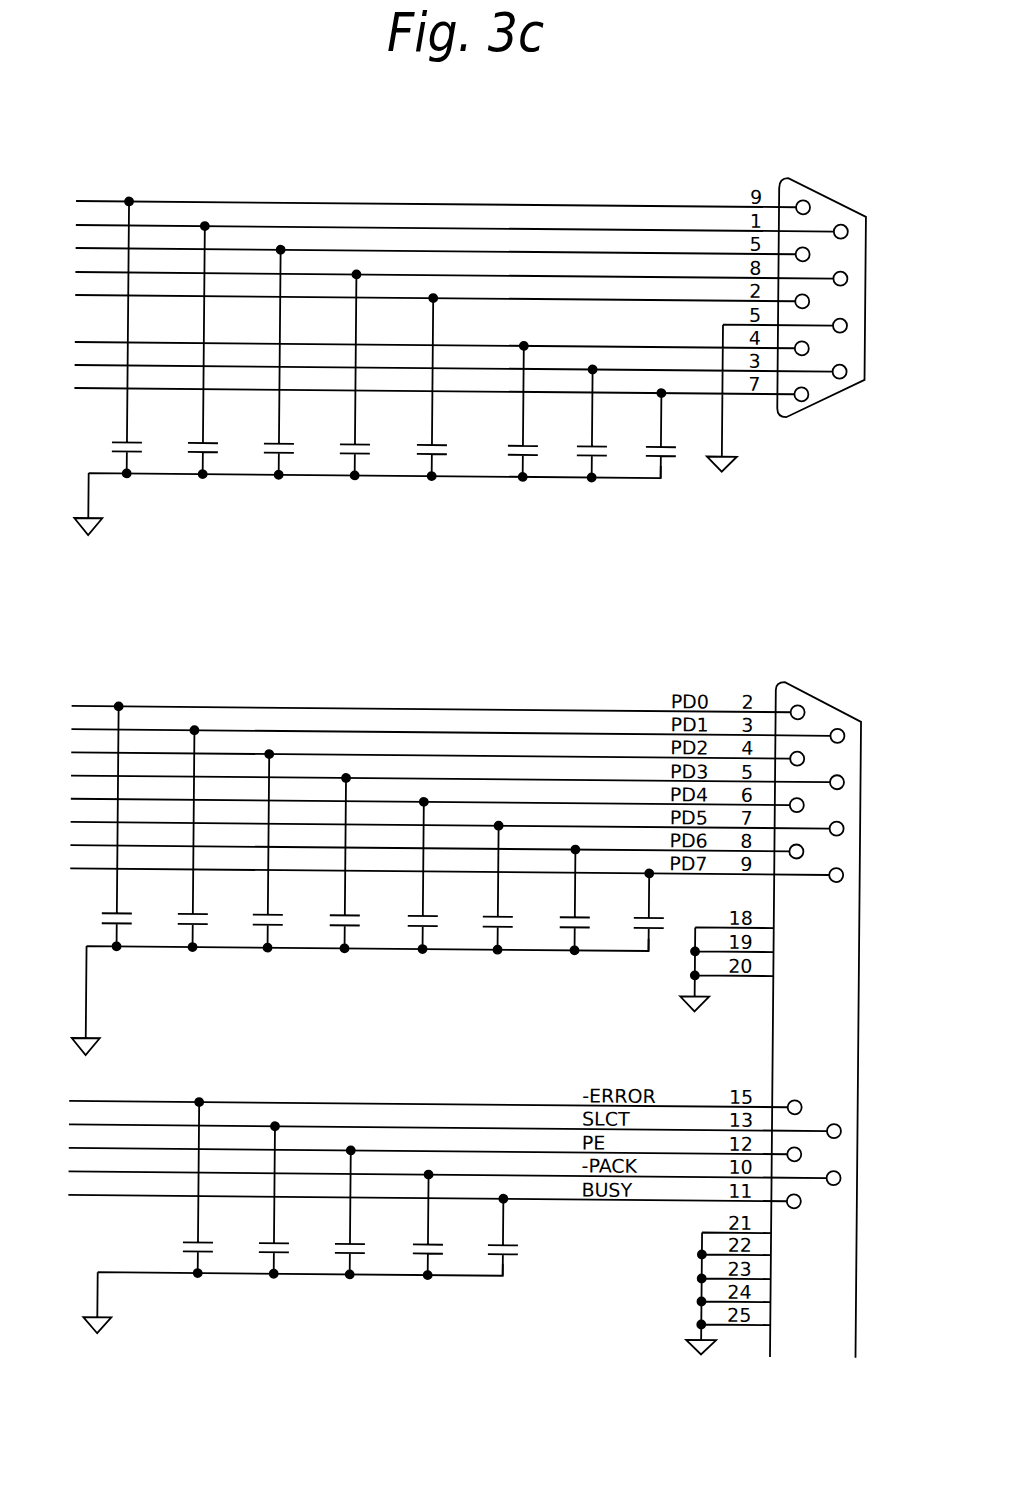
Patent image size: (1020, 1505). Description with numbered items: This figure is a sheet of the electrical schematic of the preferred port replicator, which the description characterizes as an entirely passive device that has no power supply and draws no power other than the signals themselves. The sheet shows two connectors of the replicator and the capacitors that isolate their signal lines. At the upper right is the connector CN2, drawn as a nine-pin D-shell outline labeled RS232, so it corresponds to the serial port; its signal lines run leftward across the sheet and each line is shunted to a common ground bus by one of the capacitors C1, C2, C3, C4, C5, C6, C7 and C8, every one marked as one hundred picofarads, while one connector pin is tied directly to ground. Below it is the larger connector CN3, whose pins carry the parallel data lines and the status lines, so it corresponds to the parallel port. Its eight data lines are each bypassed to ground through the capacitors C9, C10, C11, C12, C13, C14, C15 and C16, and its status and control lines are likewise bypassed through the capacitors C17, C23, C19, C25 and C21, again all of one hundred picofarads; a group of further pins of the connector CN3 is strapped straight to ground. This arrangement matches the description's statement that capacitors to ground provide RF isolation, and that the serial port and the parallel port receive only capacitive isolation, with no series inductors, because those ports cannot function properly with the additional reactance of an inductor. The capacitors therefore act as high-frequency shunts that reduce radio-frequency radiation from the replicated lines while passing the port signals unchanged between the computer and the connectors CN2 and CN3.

The RS232 connector CN2 is at (822, 302).
The parallel port connector CN3 is at (816, 1006).
The capacitor C1 100PF C1 is at (145, 364).
The capacitor C2 100PF C2 is at (215, 401).
The capacitor C3 100PF C3 is at (296, 389).
The capacitor C4 100PF C4 is at (366, 425).
The capacitor C5 100PF C5 is at (449, 415).
The capacitor C6 100PF C6 is at (518, 463).
The capacitor C7 100PF C7 is at (610, 451).
The capacitor C8 100PF C8 is at (679, 486).
The capacitor C9 100PF C9 is at (120, 853).
The capacitor C10 100PF C10 is at (202, 888).
The capacitor C11 100PF C11 is at (285, 878).
The capacitor C12 100PF C12 is at (346, 913).
The capacitor C13 100PF C13 is at (439, 903).
The capacitor C14 100PF C14 is at (506, 938).
The capacitor C15 100PF C15 is at (584, 927).
The capacitor C16 100PF C16 is at (653, 963).
The capacitor C17 100PF C17 is at (192, 1214).
The capacitor C19 100PF C19 is at (344, 1238).
The capacitor C21 100PF C21 is at (505, 1265).
The capacitor C23 100PF C23 is at (266, 1235).
The capacitor C25 100PF C25 is at (422, 1255).